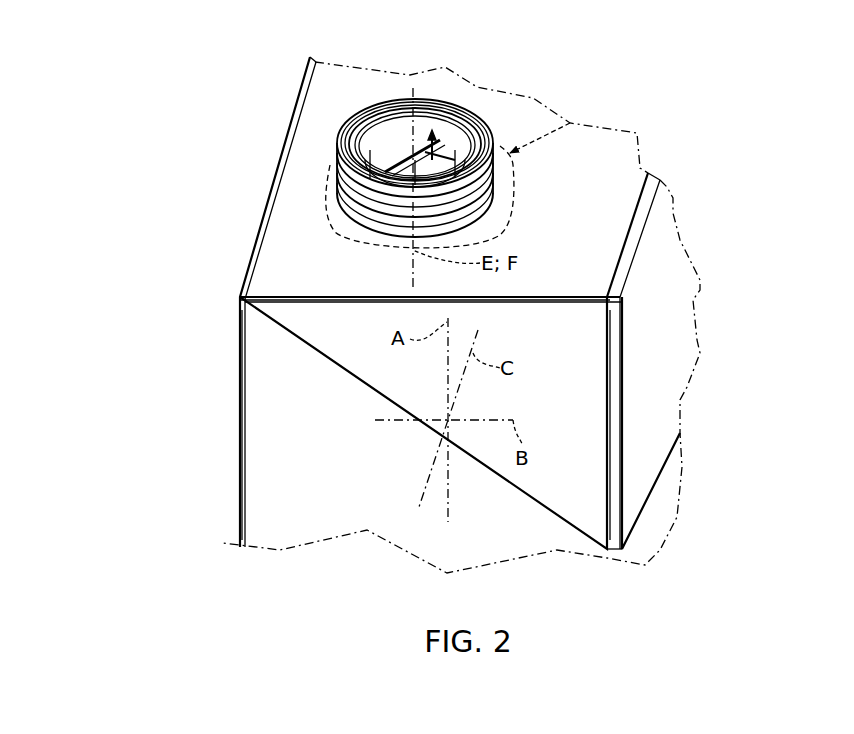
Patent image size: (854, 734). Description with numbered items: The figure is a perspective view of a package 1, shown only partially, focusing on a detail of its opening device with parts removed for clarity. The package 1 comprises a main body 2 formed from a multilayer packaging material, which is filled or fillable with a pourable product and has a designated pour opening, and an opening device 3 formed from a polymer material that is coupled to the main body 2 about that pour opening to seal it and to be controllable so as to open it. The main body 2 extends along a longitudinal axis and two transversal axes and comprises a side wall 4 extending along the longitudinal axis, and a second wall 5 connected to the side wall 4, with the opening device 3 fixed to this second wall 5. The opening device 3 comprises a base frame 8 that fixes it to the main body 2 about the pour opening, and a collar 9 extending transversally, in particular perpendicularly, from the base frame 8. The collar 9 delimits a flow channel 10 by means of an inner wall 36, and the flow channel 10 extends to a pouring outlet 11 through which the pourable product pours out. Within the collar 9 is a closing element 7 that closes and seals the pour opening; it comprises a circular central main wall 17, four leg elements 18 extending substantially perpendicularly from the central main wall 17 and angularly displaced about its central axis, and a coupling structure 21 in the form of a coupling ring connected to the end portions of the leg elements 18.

The package 1 is at (98, 80).
The main body 2 is at (237, 210).
The opening device 3 is at (467, 93).
The side wall 4 is at (245, 395).
The second wall 5 is at (622, 170).
The closing element 7 is at (382, 108).
The base frame 8 is at (570, 123).
The collar 9 is at (328, 147).
The flow channel 10 is at (350, 143).
The pouring outlet 11 is at (485, 119).
The central main wall 17 is at (408, 157).
The leg elements 18 is at (490, 180).
The coupling structure 21 is at (330, 223).
The inner wall 36 is at (353, 163).